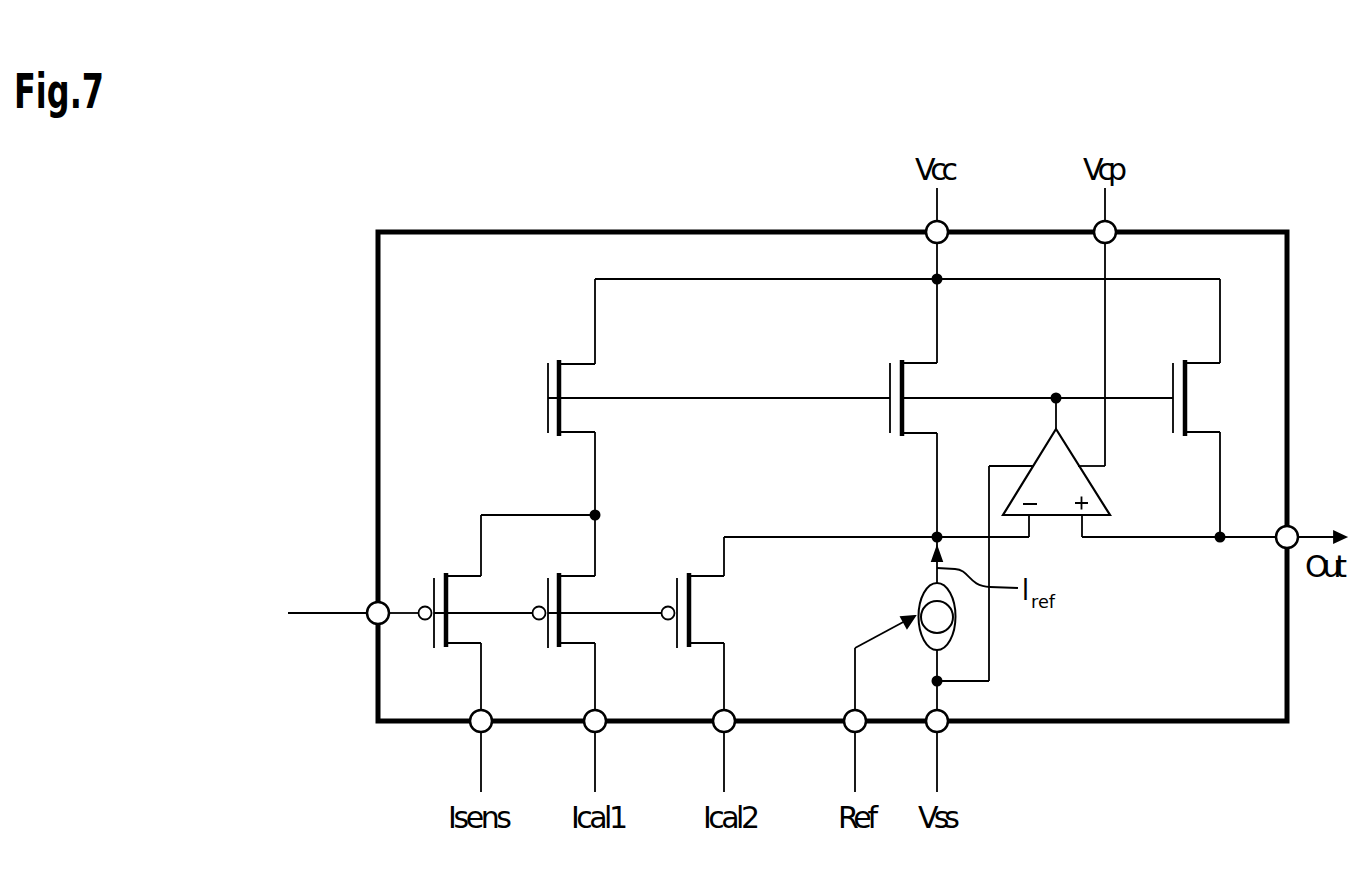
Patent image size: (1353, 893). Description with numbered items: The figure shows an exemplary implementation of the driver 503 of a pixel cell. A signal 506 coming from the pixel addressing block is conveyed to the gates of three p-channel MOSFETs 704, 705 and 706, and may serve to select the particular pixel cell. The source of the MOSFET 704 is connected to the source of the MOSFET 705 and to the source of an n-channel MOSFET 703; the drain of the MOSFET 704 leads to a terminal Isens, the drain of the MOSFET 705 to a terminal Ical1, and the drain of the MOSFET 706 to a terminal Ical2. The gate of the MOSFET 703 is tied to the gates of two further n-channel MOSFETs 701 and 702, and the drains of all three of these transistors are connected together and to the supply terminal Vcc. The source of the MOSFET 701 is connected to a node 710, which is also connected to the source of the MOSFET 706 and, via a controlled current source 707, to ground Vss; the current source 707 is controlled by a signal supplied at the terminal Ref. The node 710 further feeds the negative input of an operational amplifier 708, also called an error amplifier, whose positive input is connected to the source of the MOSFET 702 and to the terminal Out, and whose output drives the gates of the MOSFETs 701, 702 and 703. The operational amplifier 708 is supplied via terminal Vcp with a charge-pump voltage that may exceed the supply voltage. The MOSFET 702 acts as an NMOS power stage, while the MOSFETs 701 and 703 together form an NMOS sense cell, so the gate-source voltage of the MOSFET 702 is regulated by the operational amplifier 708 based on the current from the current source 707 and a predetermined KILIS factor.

The driver 503 is at (378, 346).
The signal 506 is at (336, 600).
The n-channel MOSFET 701 is at (900, 377).
The n-channel MOSFET 702 is at (1206, 398).
The n-channel MOSFET 703 is at (541, 398).
The p-channel MOSFET 704 is at (444, 589).
The p-channel MOSFET 705 is at (563, 630).
The p-channel MOSFET 706 is at (692, 630).
The controlled current source 707 is at (910, 616).
The operational amplifier 708 is at (1053, 456).
The node 710 is at (913, 522).